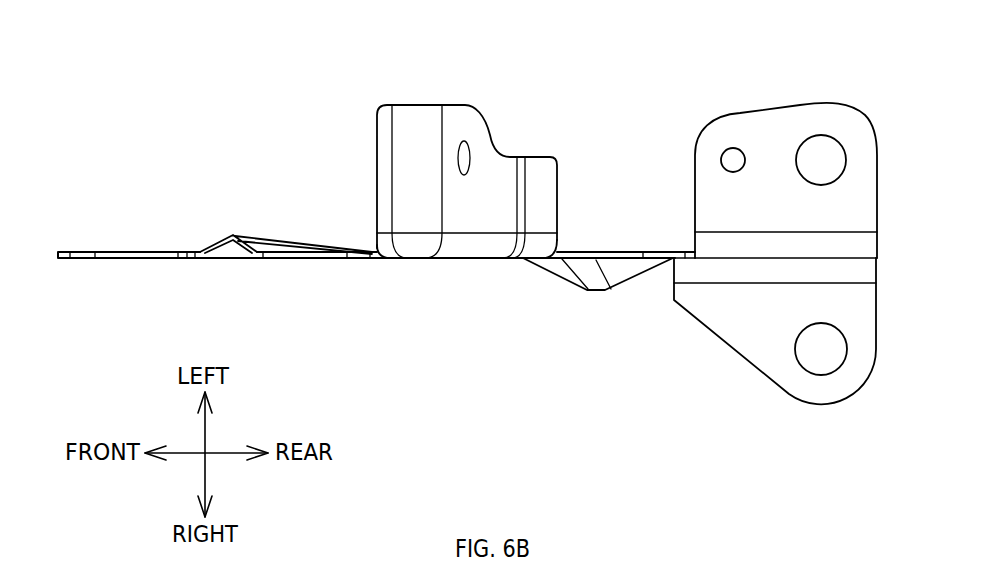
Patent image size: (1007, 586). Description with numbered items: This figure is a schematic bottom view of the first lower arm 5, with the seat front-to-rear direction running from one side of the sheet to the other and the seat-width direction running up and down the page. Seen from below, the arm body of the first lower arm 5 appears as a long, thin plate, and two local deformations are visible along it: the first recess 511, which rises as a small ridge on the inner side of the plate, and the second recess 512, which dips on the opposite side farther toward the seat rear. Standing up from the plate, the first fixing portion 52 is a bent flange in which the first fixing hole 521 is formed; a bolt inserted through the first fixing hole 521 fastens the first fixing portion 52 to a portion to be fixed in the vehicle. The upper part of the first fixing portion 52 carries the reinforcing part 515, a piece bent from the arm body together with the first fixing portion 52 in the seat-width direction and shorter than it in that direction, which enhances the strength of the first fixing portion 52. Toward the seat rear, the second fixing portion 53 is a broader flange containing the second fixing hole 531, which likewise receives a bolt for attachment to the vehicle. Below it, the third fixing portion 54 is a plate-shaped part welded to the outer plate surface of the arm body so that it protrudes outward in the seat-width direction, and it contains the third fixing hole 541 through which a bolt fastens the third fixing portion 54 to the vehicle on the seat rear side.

The first lower arm 5 is at (212, 173).
The first recess 511 is at (233, 253).
The second recess 512 is at (592, 293).
The first fixing portion 52 is at (471, 138).
The first fixing hole 521 is at (470, 159).
The reinforcing part 515 is at (535, 197).
The second fixing portion 53 is at (776, 137).
The second fixing hole 531 is at (832, 164).
The third fixing portion 54 is at (775, 380).
The third fixing hole 541 is at (832, 352).